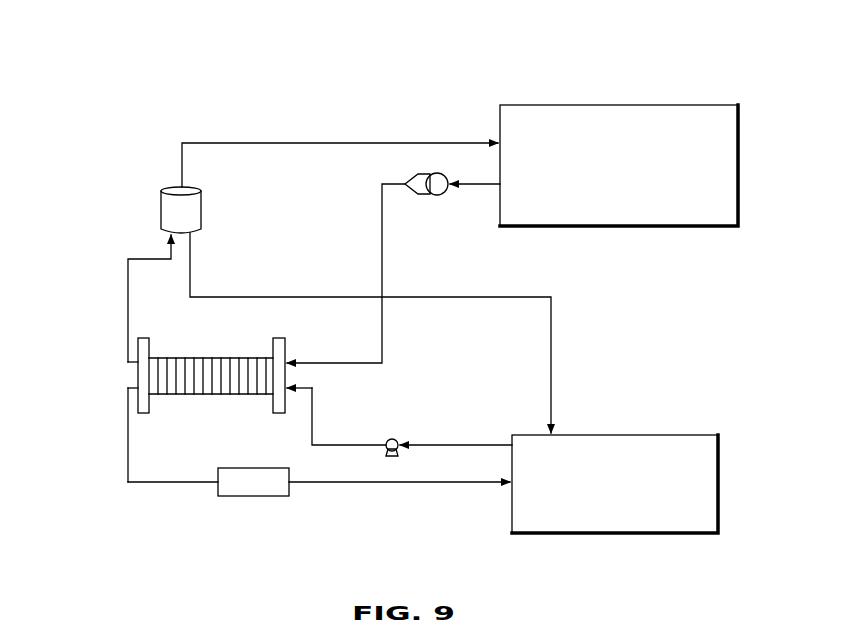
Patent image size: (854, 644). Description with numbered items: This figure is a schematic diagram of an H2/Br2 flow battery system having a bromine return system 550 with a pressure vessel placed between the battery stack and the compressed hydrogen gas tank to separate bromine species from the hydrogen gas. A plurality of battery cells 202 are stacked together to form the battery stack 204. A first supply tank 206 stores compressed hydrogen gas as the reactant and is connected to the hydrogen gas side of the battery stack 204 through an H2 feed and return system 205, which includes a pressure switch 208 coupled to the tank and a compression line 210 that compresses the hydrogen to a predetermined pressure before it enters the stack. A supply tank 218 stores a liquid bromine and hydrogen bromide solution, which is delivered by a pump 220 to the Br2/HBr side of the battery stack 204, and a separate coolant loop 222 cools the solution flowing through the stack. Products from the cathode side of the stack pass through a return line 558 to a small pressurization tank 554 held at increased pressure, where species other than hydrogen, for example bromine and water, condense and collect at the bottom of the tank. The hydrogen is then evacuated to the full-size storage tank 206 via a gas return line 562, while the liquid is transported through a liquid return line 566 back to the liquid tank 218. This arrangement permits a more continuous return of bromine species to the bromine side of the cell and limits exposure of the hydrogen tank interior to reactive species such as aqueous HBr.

The battery cells 202 is at (202, 356).
The battery stack 204 is at (108, 378).
The H2 feed and return system 205 is at (185, 105).
The first supply tank 206 is at (500, 128).
The pressure switch 208 is at (405, 182).
The compression line 210 is at (382, 282).
The supply tank 218 is at (622, 435).
The pump 220 is at (383, 452).
The coolant loop 222 is at (218, 472).
The bromine return system 550 is at (126, 204).
The pressurization tank 554 is at (203, 198).
The return line 558 is at (128, 285).
The gas return line 562 is at (181, 147).
The liquid return line 566 is at (551, 358).